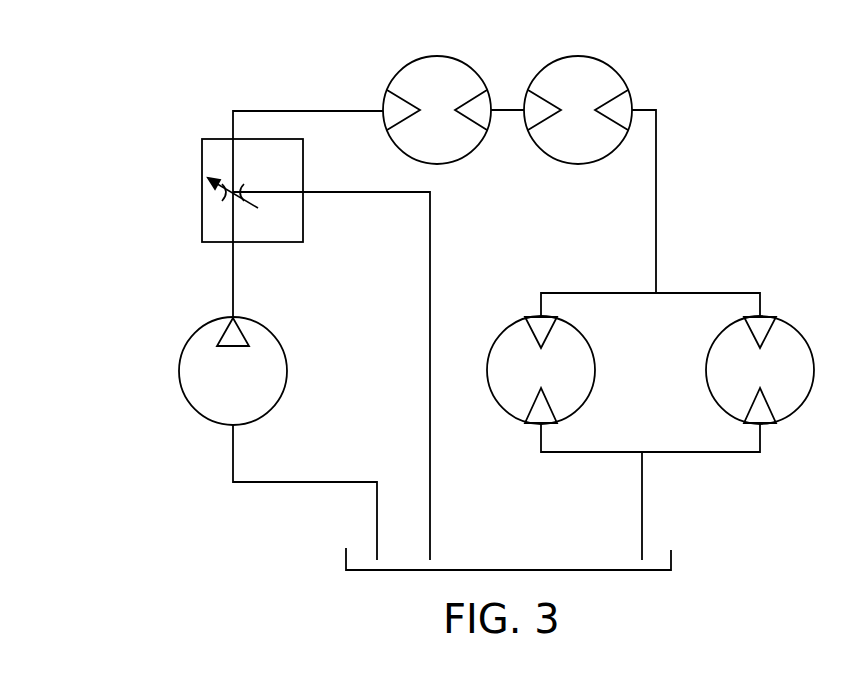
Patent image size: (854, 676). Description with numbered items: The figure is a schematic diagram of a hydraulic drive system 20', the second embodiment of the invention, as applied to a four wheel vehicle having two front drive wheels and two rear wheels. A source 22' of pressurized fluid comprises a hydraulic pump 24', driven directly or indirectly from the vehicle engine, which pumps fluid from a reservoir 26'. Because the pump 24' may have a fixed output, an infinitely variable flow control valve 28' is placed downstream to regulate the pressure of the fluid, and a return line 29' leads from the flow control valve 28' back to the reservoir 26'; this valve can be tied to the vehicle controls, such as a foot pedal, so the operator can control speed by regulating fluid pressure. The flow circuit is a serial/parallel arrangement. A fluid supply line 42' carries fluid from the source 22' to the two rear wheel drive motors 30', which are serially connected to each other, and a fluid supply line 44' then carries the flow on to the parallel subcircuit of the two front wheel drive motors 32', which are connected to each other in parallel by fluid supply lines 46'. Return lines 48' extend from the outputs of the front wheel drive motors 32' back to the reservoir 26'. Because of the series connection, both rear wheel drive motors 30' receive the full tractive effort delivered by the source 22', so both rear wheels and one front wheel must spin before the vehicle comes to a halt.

The hydraulic drive system 20' is at (770, 121).
The source of pressurized fluid 22' is at (116, 277).
The hydraulic pump 24' is at (243, 438).
The reservoir 26' is at (470, 564).
The flow control valve 28' is at (225, 188).
The return line 29' is at (366, 376).
The rear wheel drive motors 30' is at (494, 88).
The front wheel drive motors 32' is at (650, 369).
The fluid supply line 42' is at (308, 193).
The fluid supply line 44' is at (593, 175).
The fluid supply lines 46' is at (660, 282).
The return lines 48' is at (650, 492).